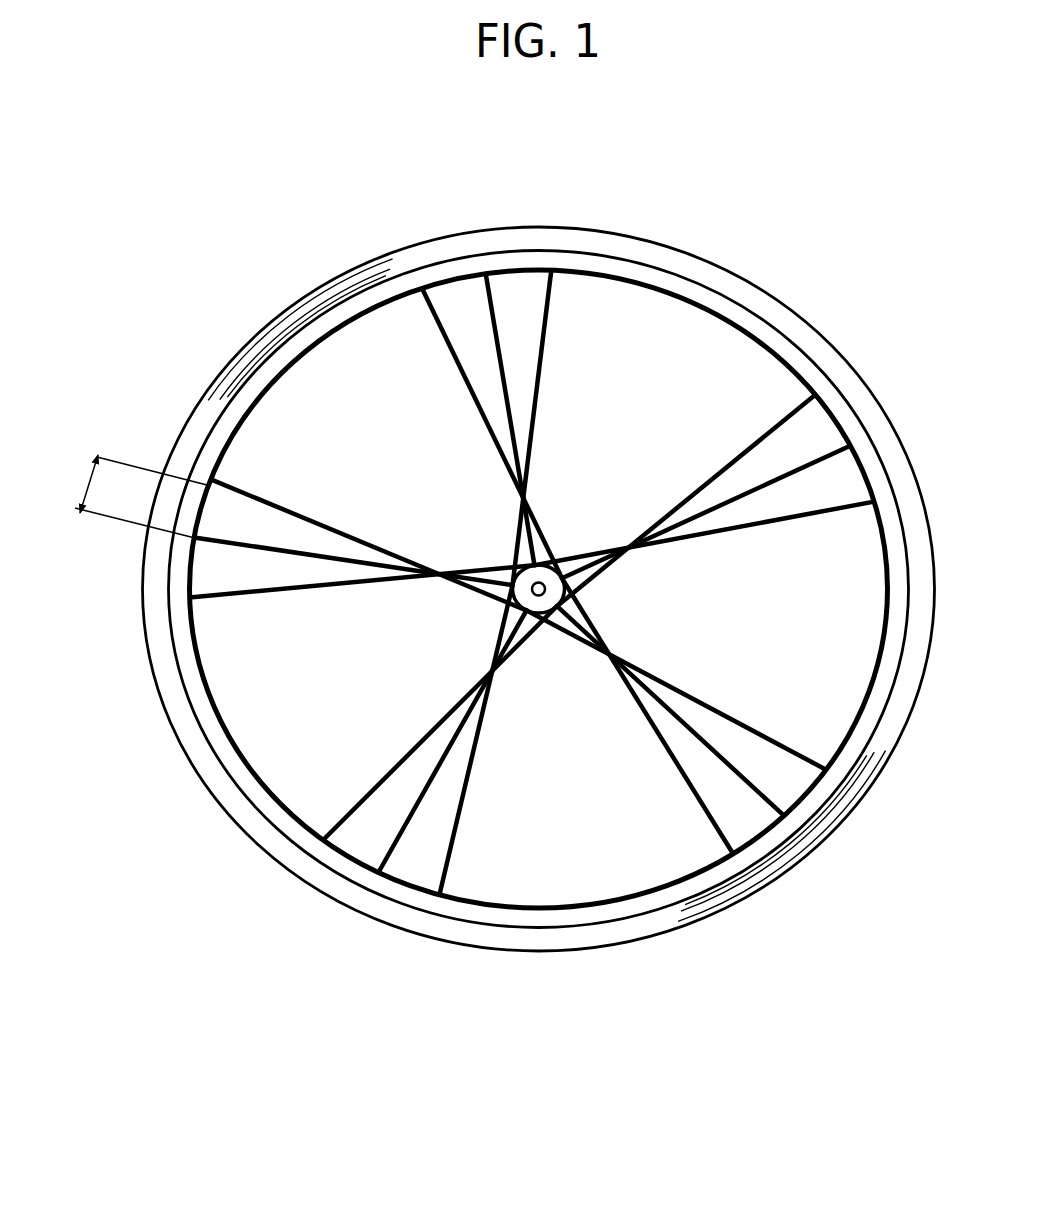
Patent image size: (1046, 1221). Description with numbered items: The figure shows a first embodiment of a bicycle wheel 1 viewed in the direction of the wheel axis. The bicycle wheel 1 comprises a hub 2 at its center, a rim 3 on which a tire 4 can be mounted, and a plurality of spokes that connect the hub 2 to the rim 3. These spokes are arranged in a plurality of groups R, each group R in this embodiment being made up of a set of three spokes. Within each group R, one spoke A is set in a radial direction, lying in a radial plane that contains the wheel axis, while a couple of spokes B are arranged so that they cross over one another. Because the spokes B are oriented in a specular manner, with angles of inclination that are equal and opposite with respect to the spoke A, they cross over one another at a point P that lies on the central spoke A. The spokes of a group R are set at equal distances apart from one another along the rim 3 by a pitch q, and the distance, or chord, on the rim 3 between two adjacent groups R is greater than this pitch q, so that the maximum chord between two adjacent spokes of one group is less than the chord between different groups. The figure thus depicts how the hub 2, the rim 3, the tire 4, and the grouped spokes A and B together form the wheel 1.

The bicycle wheel 1 is at (260, 292).
The hub 2 is at (548, 582).
The rim 3 is at (680, 294).
The tire 4 is at (678, 258).
The spoke A is at (494, 300).
The spokes B is at (440, 312).
The crossing point P is at (520, 497).
The group of spokes R is at (430, 362).
The pitch q is at (88, 485).